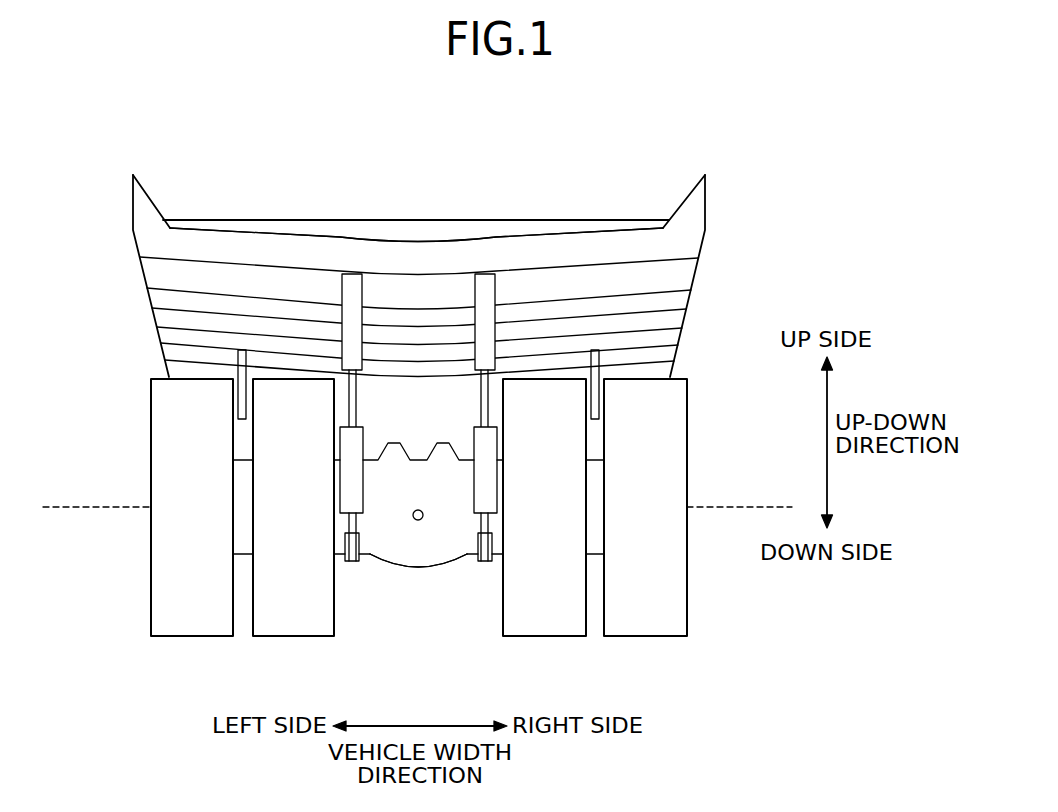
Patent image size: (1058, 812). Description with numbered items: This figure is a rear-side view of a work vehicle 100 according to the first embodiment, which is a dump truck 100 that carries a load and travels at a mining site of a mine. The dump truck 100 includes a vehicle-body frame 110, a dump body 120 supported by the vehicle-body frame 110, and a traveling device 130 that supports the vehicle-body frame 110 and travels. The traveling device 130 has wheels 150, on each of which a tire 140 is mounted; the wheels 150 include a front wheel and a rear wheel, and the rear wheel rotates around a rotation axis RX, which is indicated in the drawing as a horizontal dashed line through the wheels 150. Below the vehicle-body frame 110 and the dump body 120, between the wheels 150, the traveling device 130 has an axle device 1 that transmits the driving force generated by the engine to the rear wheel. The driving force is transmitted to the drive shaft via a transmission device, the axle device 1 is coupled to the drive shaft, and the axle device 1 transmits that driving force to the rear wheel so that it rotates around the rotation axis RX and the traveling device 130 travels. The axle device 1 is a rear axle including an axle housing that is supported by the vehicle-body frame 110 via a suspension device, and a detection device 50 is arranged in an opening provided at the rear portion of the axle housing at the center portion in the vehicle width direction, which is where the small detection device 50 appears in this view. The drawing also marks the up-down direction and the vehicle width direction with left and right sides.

The work vehicle 100 is at (416, 394).
The vehicle-body frame 110 is at (150, 362).
The dump body 120 is at (383, 226).
The traveling device 130 is at (372, 600).
The tire 140 is at (185, 638).
The wheels 150 is at (150, 545).
The detection device 50 is at (408, 538).
The axle device 1 is at (448, 546).
The rotation axis RX is at (63, 505).